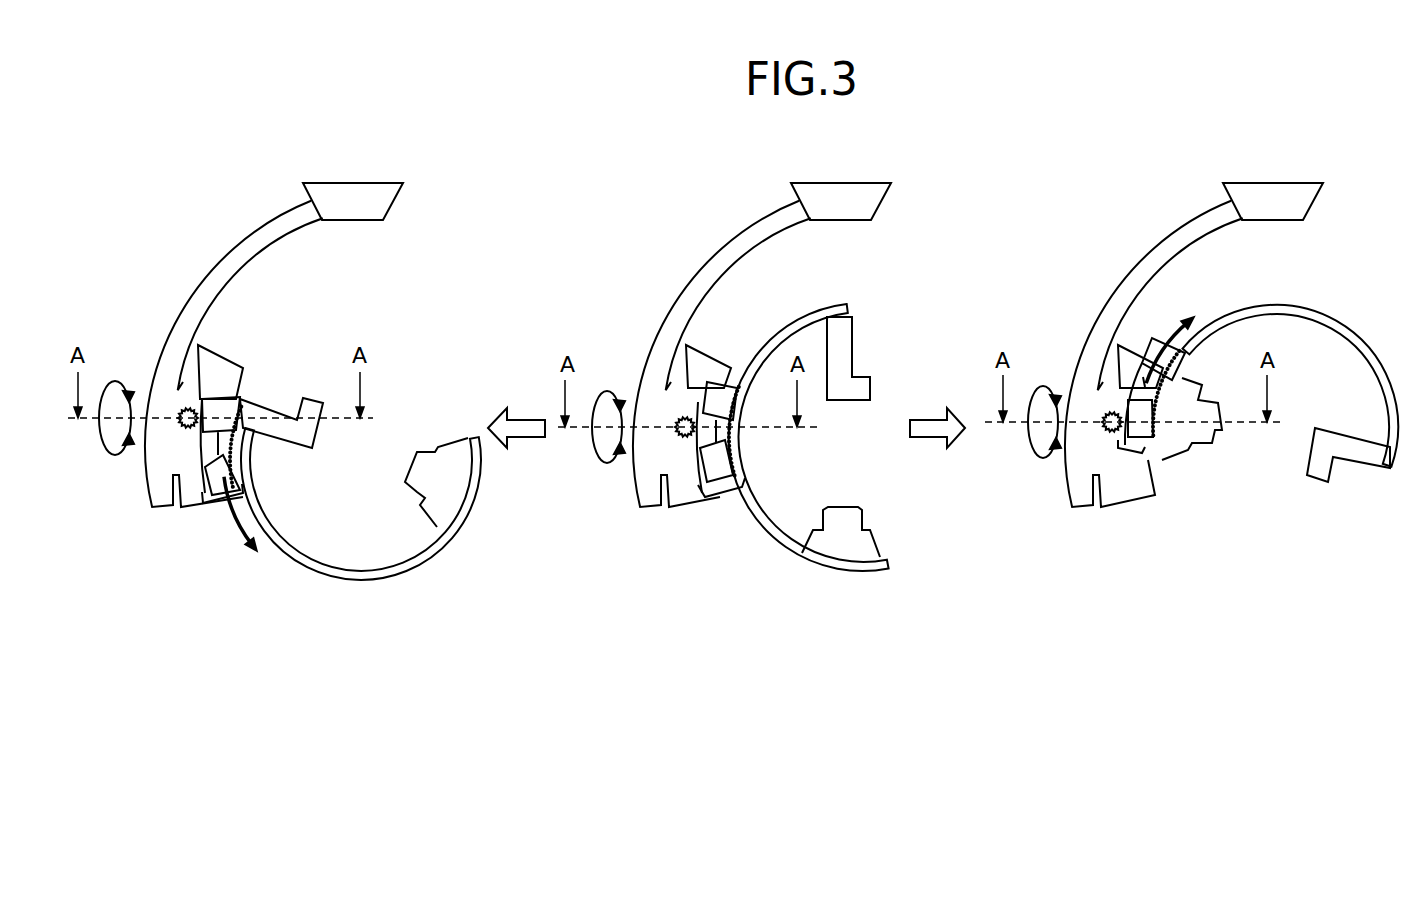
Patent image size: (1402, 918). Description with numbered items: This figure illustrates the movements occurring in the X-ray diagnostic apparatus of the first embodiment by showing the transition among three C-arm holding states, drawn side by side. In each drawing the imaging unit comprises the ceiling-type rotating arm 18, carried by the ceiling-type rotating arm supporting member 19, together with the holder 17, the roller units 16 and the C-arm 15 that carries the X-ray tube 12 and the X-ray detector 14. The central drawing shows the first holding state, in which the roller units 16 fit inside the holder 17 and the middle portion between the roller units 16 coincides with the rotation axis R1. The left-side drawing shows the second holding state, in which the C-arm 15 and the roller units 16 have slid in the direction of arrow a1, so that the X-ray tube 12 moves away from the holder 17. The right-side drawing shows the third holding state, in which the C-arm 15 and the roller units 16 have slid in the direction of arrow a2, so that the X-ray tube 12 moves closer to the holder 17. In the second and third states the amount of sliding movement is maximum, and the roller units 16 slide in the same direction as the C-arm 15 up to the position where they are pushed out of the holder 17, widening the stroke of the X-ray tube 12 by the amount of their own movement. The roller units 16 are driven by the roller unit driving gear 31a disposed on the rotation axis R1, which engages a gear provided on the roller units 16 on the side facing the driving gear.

The X-ray tube 12 is at (437, 447).
The X-ray detector 14 is at (315, 400).
The C-arm 15 is at (308, 553).
The roller units 16 is at (220, 512).
The holder 17 is at (223, 355).
The ceiling-type rotating arm 18 is at (215, 257).
The ceiling-type rotating arm supporting member 19 is at (393, 200).
The roller unit driving gear 31a is at (183, 432).
The rotation axis R1 is at (112, 382).
The arrow a1 is at (250, 503).
The arrow a2 is at (1193, 327).